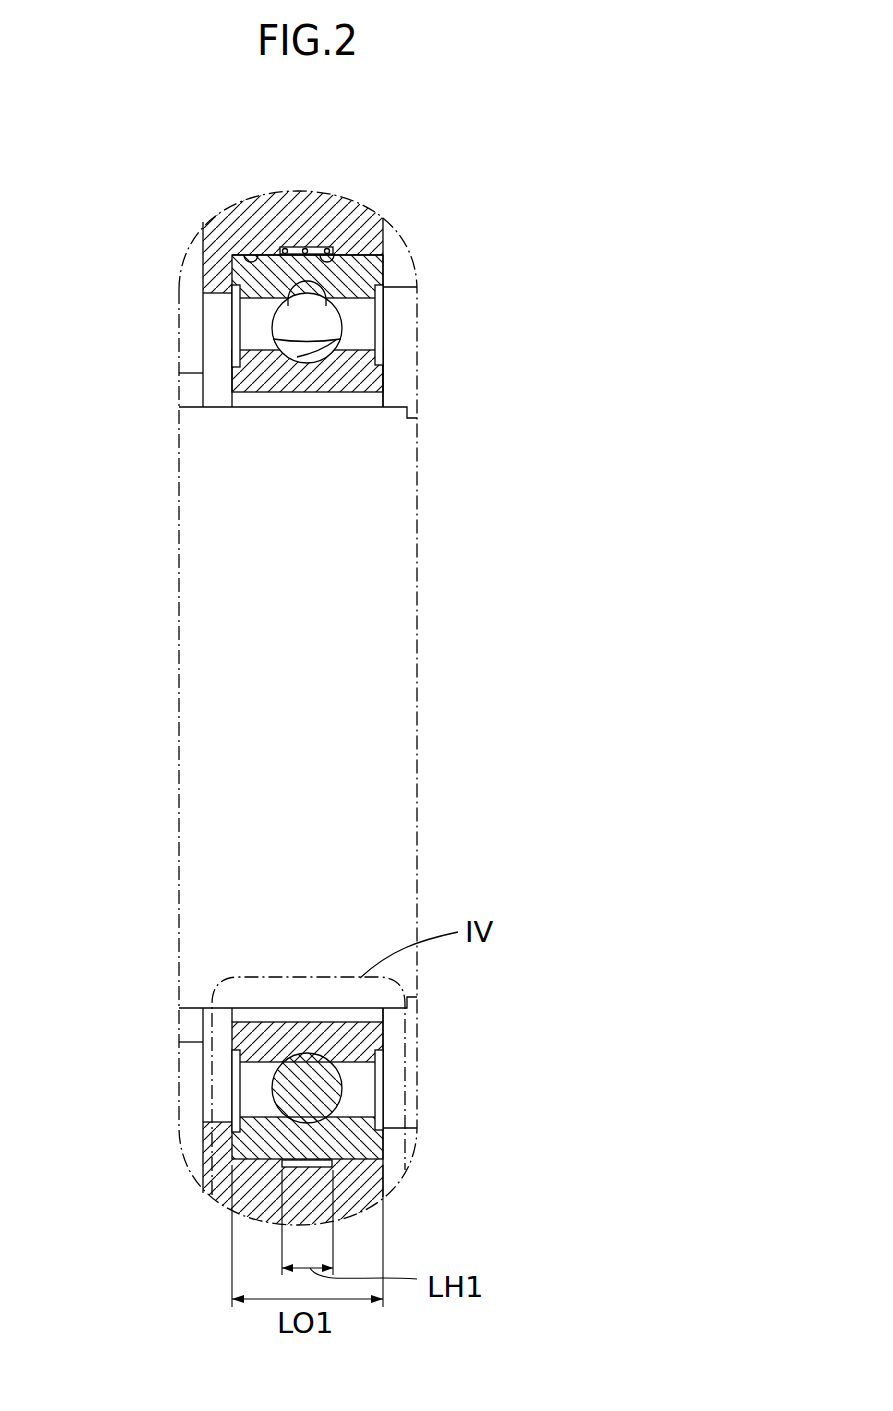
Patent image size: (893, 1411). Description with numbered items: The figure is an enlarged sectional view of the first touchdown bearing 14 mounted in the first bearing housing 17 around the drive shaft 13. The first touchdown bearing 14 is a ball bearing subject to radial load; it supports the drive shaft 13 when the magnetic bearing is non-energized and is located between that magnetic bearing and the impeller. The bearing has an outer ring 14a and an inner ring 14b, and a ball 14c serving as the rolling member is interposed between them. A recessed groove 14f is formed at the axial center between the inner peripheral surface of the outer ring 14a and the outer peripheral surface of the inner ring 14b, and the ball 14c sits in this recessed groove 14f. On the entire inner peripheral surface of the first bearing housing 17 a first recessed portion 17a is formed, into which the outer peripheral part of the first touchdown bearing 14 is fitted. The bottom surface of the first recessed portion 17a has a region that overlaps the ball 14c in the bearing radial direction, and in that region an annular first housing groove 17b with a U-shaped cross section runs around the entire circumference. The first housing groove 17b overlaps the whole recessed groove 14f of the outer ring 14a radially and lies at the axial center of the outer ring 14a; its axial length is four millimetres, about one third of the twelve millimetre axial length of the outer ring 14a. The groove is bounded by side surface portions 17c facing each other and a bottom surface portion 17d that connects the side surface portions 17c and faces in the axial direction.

The drive shaft 13 is at (383, 697).
The first touchdown bearing 14 is at (309, 689).
The outer ring 14a is at (383, 272).
The inner ring 14b is at (233, 378).
The ball 14c is at (273, 316).
The recessed groove 14f is at (310, 294).
The first bearing housing 17 is at (315, 265).
The first recessed portion 17a is at (243, 262).
The first housing groove 17b is at (340, 277).
The side surface portions 17c is at (293, 252).
The bottom surface portion 17d is at (307, 247).